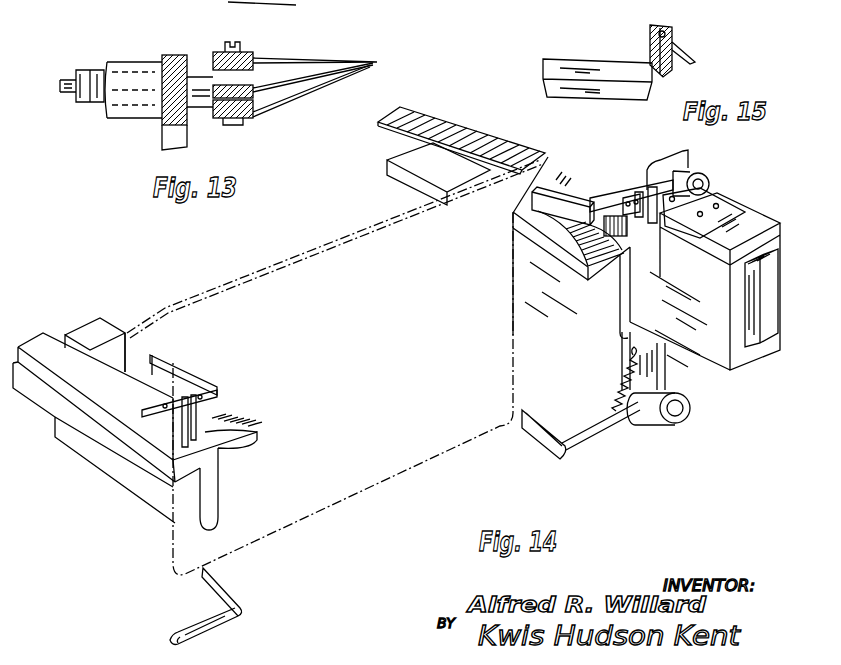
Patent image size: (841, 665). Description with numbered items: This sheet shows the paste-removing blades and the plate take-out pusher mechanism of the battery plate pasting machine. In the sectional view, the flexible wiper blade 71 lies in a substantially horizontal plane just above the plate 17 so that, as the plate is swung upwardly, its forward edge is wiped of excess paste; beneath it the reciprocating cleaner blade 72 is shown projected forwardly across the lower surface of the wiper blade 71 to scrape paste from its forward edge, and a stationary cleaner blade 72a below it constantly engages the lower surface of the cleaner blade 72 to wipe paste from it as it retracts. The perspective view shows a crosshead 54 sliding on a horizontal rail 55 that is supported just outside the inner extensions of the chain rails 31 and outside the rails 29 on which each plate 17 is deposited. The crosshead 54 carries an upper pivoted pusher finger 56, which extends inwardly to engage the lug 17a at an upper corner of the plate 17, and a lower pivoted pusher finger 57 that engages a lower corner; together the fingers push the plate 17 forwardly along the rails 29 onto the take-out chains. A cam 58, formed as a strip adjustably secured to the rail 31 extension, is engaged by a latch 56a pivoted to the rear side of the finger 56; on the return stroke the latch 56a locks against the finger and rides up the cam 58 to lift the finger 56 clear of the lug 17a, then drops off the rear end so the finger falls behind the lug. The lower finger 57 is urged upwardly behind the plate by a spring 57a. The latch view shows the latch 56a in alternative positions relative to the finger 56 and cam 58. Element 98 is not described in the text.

In FIG. 13, the plate 17 is at (201, 106).
In FIG. 14, the plate 17 is at (240, 283).
In FIG. 14, the lug 17a is at (557, 163).
In FIG. 14, the rails 29 is at (420, 158).
In FIG. 14, the chain rails 31 is at (621, 286).
In FIG. 14, the crosshead 54 is at (737, 363).
In FIG. 14, the horizontal rail 55 is at (764, 342).
In FIG. 15, the upper pivoted pusher finger 56 is at (658, 22).
In FIG. 14, the upper pivoted pusher finger 56 is at (616, 196).
In FIG. 15, the latch 56a is at (652, 46).
In FIG. 14, the latch 56a is at (660, 243).
In FIG. 14, the lower pivoted pusher finger 57 is at (540, 437).
In FIG. 14, the spring 57a is at (622, 391).
In FIG. 15, the cam 58 is at (553, 65).
In FIG. 14, the cam 58 is at (507, 152).
In FIG. 13, the wiper blade 71 is at (306, 63).
In FIG. 13, the reciprocating cleaner blade 72 is at (267, 91).
In FIG. 13, the stationary cleaner blade 72a is at (258, 94).
In FIG. 13, the element 98 is at (198, 8).